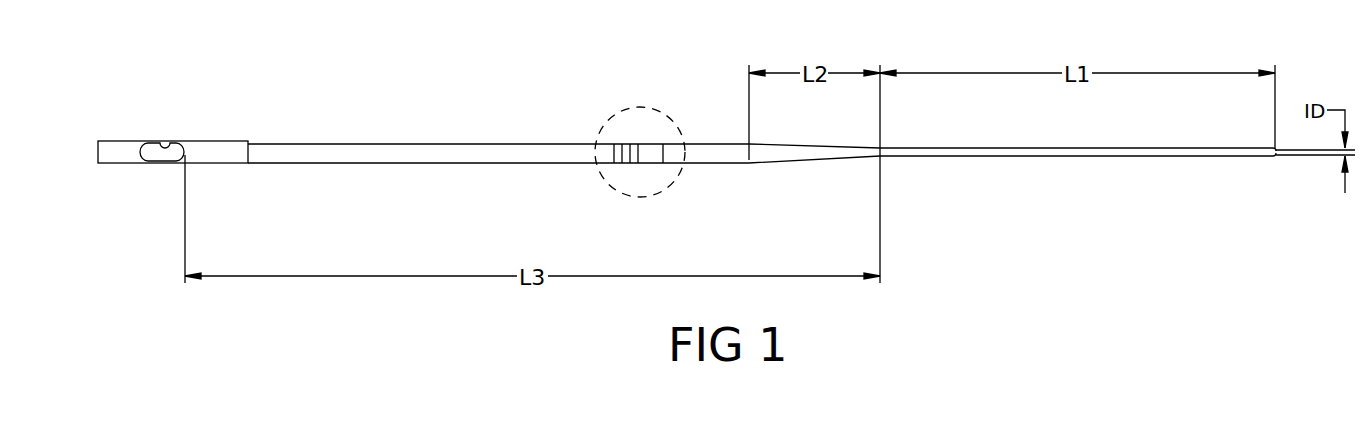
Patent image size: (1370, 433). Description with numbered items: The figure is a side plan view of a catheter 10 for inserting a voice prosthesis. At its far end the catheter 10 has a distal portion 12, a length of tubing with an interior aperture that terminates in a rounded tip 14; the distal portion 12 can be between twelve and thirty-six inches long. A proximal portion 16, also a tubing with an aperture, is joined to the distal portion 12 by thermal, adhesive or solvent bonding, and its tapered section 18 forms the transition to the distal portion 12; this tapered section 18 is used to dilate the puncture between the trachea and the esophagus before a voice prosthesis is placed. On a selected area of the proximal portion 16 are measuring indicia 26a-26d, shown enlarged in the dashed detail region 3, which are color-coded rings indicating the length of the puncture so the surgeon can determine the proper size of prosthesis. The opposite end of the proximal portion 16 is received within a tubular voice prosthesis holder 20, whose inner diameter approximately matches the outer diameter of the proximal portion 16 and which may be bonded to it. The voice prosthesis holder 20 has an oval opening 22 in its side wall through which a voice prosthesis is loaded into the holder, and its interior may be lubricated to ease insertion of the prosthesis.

The catheter 10 is at (458, 115).
The distal portion 12 is at (1080, 157).
The rounded tip 14 is at (1272, 158).
The proximal portion 16 is at (355, 143).
The tapered section 18 is at (818, 160).
The voice prosthesis holder 20 is at (121, 165).
The opening 22 is at (160, 145).
The measuring indicia 26a-26d is at (637, 133).
The detail region of FIG. 3 is at (608, 122).